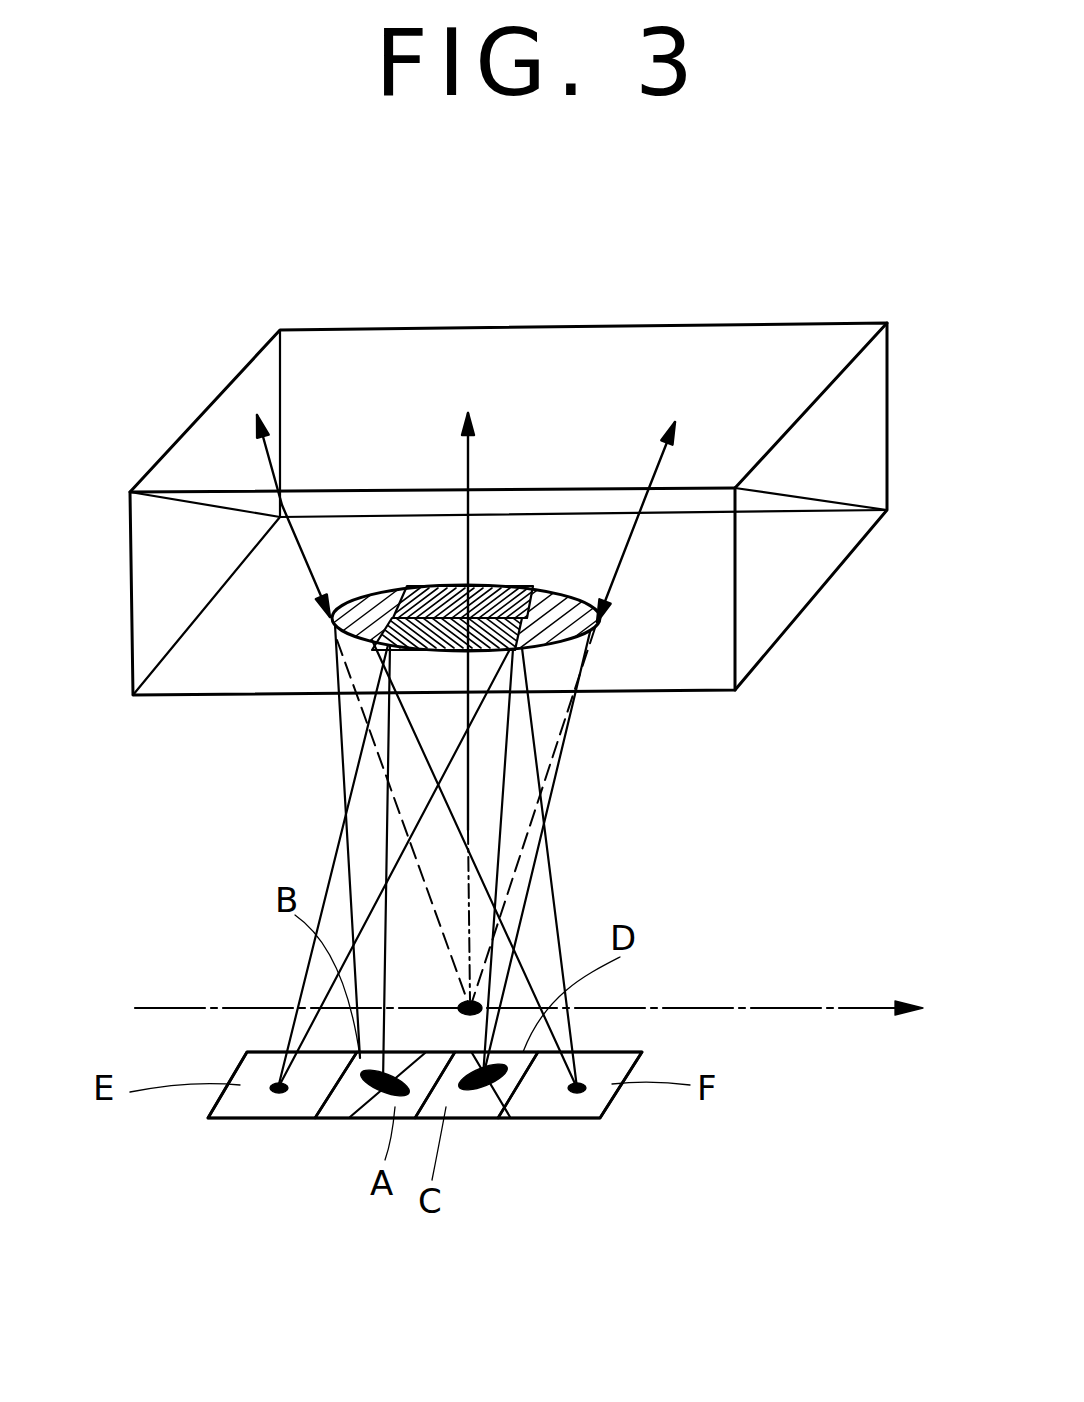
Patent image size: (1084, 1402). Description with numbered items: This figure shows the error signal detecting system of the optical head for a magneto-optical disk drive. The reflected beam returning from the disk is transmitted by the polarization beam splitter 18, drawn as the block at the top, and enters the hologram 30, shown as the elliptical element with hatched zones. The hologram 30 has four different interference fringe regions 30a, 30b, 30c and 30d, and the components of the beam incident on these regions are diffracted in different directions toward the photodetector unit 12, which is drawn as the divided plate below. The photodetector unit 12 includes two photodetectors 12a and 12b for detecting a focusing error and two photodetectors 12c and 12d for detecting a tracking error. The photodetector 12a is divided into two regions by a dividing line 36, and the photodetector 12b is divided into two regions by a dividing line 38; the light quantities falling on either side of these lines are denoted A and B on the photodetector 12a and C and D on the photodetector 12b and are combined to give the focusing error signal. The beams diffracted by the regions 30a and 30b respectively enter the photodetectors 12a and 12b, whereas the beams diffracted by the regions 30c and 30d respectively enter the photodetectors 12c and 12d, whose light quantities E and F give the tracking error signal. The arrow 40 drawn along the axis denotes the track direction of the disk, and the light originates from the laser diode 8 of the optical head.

The laser diode 8 is at (480, 1005).
The photodetector unit 12 is at (245, 1048).
The photodetector 12a is at (365, 1120).
The photodetector 12b is at (467, 1120).
The photodetector 12c is at (237, 1120).
The photodetector 12d is at (567, 1120).
The polarization beam splitter 18 is at (710, 330).
The hologram 30 is at (445, 582).
The interference fringe region 30a is at (357, 600).
The interference fringe region 30b is at (600, 618).
The interference fringe region 30c is at (507, 590).
The interference fringe region 30d is at (392, 660).
The dividing line 36 is at (332, 1120).
The dividing line 38 is at (510, 1120).
The arrow 40 is at (802, 1007).